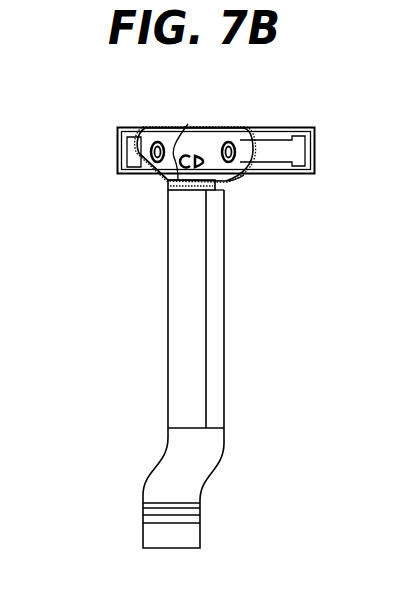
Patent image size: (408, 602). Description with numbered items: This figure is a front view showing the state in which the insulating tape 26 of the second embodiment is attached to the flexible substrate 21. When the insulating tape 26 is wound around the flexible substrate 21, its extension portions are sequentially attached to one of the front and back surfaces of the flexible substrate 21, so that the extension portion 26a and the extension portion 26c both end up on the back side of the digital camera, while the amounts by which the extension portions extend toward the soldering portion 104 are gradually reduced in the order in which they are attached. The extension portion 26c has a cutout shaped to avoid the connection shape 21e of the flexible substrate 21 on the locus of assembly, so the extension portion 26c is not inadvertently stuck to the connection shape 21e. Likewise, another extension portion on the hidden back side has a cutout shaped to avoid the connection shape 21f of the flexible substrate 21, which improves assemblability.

The soldering portion 104 is at (133, 151).
The flexible substrate 21 is at (232, 130).
The extension portion 26a is at (190, 131).
The connection shape 21e is at (166, 183).
The connection shape 21f is at (232, 182).
The extension portion 26c is at (214, 190).
The insulating tape 26 is at (168, 322).